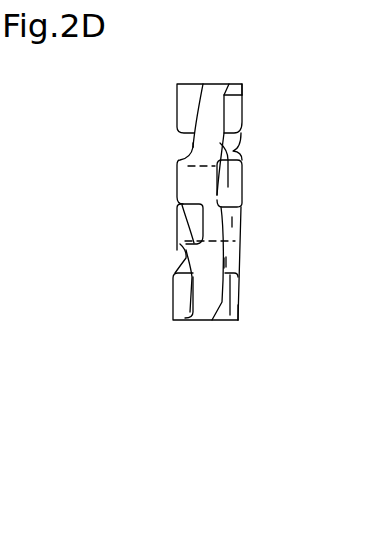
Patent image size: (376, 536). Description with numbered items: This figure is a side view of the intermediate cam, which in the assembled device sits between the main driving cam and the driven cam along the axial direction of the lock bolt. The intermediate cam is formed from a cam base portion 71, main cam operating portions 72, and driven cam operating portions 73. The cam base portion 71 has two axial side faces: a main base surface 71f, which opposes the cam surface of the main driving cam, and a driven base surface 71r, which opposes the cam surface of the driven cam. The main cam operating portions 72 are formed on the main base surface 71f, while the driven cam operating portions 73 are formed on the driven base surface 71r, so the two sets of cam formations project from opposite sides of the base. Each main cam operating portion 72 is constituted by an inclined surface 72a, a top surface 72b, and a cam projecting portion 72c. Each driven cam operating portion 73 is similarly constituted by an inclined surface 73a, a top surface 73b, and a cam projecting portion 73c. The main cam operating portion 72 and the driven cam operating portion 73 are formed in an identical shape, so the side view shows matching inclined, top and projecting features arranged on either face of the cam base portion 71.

The cam base portion 71 is at (200, 308).
The main base surface 71f is at (193, 143).
The driven base surface 71r is at (224, 263).
The main cam operating portion 72 is at (202, 107).
The inclined surface 72a is at (177, 120).
The top surface 72b is at (178, 155).
The cam projecting portion 72c is at (177, 188).
The driven cam operating portion 73 is at (242, 118).
The inclined surface 73a is at (238, 313).
The top surface 73b is at (226, 262).
The cam projecting portion 73c is at (241, 91).